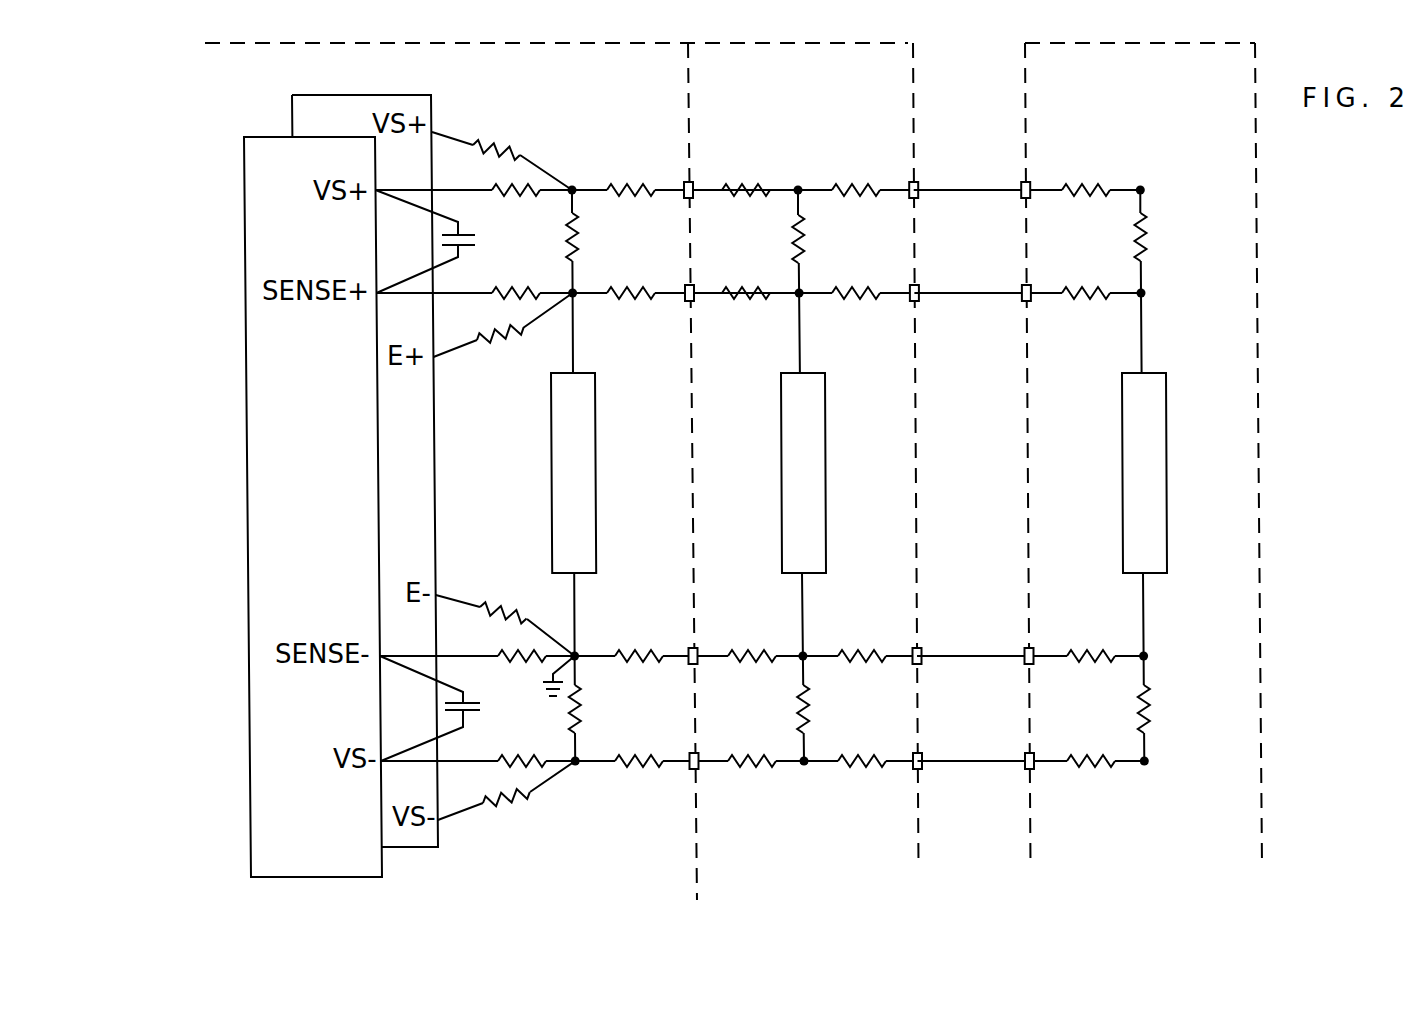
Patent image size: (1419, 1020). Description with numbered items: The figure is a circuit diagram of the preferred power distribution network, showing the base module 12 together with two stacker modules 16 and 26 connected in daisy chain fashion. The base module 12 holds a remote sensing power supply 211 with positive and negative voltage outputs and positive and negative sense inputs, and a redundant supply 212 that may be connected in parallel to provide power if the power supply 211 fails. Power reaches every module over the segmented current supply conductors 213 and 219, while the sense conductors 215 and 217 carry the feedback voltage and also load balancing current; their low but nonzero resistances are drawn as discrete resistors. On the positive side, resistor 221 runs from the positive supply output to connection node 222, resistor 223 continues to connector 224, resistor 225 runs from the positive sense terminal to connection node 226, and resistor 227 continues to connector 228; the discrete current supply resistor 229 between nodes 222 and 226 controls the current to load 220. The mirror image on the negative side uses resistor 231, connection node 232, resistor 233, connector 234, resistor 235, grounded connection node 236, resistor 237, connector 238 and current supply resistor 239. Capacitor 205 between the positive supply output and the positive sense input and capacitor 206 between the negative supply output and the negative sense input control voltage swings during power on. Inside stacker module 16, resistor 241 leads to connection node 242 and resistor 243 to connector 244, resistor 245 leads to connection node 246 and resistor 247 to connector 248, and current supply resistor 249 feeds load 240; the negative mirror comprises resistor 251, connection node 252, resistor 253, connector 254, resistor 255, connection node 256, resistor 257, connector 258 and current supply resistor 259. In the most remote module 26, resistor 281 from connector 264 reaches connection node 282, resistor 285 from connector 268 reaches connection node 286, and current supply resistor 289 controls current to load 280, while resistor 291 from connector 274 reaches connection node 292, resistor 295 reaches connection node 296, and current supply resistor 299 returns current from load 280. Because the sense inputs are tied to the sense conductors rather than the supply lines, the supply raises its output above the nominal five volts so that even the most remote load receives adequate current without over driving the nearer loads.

The base module 12 is at (550, 39).
The stacker module 16 is at (922, 105).
The stacker module 26 is at (1263, 350).
The capacitor 205 is at (465, 247).
The capacitor 206 is at (483, 722).
The power supply 211 is at (244, 155).
The redundant supply 212 is at (292, 110).
The current supply conductor 213 is at (968, 192).
The sense conductor 215 is at (987, 267).
The sense conductor 217 is at (957, 655).
The current supply conductor 219 is at (983, 738).
The load 220 is at (597, 458).
The resistor 221 is at (512, 198).
The connection node 222 is at (574, 188).
The resistor 223 is at (627, 187).
The connector 224 is at (691, 183).
The resistor 225 is at (533, 263).
The connection node 226 is at (573, 295).
The resistor 227 is at (635, 288).
The connector 228 is at (692, 300).
The current supply resistor 229 is at (577, 252).
The resistor 231 is at (542, 742).
The connection node 232 is at (576, 763).
The resistor 233 is at (657, 733).
The connector 234 is at (693, 766).
The resistor 235 is at (512, 667).
The connection node 236 is at (576, 653).
The resistor 237 is at (638, 652).
The connector 238 is at (695, 663).
The current supply resistor 239 is at (577, 723).
The load 240 is at (825, 457).
The resistor 241 is at (743, 202).
The connection node 242 is at (798, 188).
The resistor 243 is at (880, 163).
The connector 244 is at (947, 167).
The resistor 245 is at (758, 262).
The connection node 246 is at (800, 295).
The resistor 247 is at (847, 285).
The connector 248 is at (915, 300).
The current supply resistor 249 is at (800, 250).
The resistor 251 is at (735, 757).
The connection node 252 is at (805, 762).
The resistor 253 is at (867, 767).
The connector 254 is at (918, 763).
The resistor 255 is at (735, 655).
The connection node 256 is at (804, 655).
The resistor 257 is at (857, 655).
The connector 258 is at (918, 663).
The current supply resistor 259 is at (807, 720).
The connector 264 is at (1027, 185).
The connector 268 is at (1027, 300).
The connector 274 is at (1058, 747).
The load 280 is at (1200, 440).
The resistor 281 is at (1083, 182).
The connection node 282 is at (1141, 188).
The resistor 285 is at (1100, 267).
The connection node 286 is at (1142, 295).
The current supply resistor 289 is at (1147, 248).
The resistor 291 is at (1087, 767).
The connection node 292 is at (1145, 762).
The resistor 295 is at (1072, 655).
The connection node 296 is at (1145, 655).
The current supply resistor 299 is at (1148, 717).